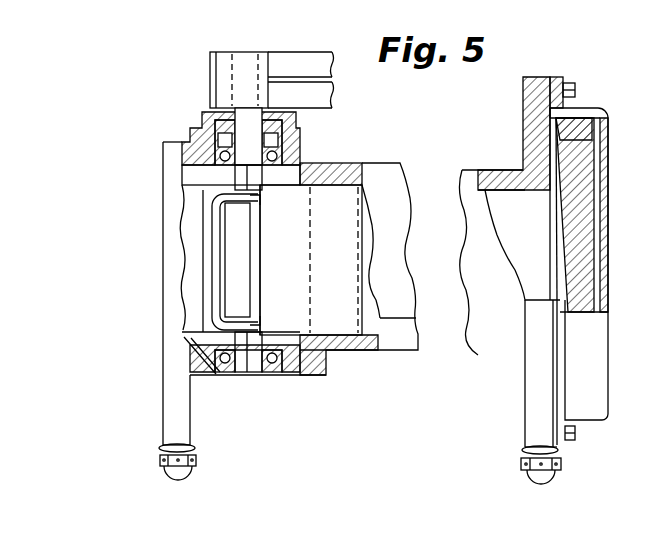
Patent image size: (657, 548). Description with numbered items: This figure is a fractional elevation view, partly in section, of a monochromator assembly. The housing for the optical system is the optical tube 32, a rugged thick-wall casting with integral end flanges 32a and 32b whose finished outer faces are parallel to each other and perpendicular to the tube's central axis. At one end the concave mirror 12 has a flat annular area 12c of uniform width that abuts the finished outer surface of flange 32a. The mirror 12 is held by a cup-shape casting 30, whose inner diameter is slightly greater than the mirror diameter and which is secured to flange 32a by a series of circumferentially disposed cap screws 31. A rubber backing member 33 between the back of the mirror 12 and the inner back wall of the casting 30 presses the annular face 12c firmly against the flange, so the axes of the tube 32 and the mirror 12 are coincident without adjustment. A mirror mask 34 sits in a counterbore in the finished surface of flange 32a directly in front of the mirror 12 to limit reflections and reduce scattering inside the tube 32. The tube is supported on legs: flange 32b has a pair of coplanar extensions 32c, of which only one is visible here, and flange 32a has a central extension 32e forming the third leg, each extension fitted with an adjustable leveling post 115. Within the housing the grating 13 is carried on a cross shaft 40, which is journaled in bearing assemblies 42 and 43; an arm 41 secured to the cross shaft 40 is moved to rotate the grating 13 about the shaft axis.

The arm 41 is at (286, 57).
The cross shaft 40 is at (243, 118).
The bearing assembly 42 is at (300, 130).
The bearing assembly 43 is at (225, 380).
The grating 13 is at (242, 253).
The optical tube 32 is at (483, 338).
The end flange 32b is at (172, 390).
The extension 32c is at (190, 437).
The adjustable leveling post 115 is at (172, 473).
The end flange 32a is at (539, 80).
The cap screw 31 is at (562, 85).
The rubber backing member 33 is at (598, 110).
The flat annular area 12c is at (553, 118).
The mirror 12 is at (572, 246).
The mirror mask 34 is at (550, 222).
The cup-shape casting 30 is at (592, 364).
The extension 32e is at (536, 428).